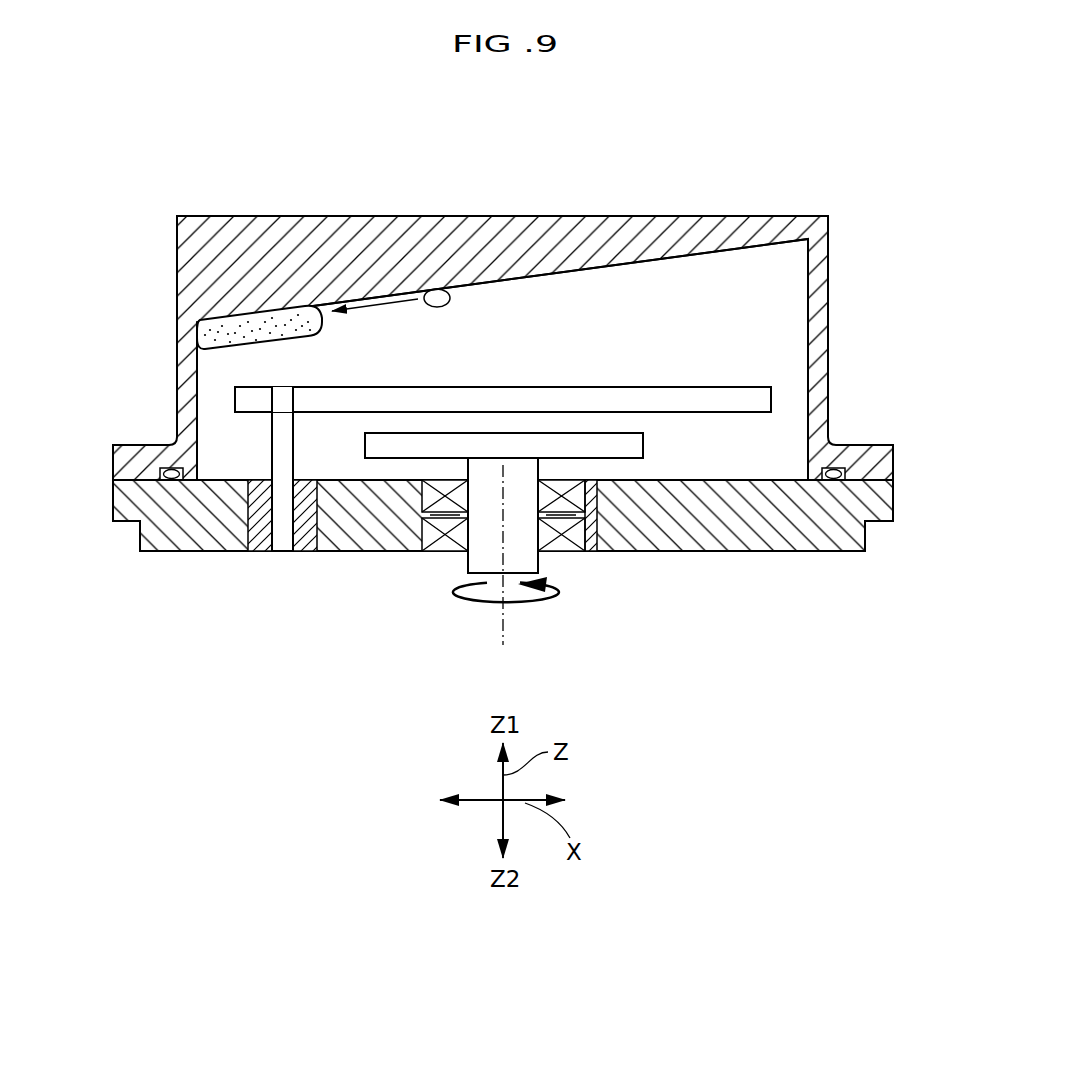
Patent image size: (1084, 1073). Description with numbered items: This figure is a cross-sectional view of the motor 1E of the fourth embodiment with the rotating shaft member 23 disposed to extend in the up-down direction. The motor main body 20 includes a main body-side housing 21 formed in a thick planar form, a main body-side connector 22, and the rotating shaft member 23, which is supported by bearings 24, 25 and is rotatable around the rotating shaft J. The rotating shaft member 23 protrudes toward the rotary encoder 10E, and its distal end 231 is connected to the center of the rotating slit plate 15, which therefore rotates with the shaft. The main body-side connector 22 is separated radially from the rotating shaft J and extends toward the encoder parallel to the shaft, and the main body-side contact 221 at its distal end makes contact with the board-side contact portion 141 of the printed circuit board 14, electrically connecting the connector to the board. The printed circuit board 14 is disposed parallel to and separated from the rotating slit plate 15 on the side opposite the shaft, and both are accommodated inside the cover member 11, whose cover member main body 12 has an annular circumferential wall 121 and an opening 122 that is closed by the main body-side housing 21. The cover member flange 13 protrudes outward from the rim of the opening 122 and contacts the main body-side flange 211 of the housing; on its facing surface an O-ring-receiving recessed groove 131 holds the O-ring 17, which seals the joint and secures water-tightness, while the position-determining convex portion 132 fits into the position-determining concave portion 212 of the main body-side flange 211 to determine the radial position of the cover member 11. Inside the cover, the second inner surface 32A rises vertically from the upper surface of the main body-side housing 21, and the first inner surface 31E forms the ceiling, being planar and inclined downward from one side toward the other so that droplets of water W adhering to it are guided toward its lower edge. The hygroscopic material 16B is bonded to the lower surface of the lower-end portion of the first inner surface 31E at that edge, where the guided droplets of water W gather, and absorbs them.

The motor 1E is at (852, 158).
The rotary encoder 10E is at (832, 277).
The cover member 11 is at (94, 385).
The cover member main body 12 is at (176, 390).
The cover member flange 13 is at (152, 445).
The circumferential wall 121 is at (828, 410).
The opening 122 is at (806, 482).
The O-ring-receiving recessed groove 131 is at (163, 486).
The position-determining convex portion 132 is at (148, 488).
The printed circuit board 14 is at (722, 405).
The board-side contact portion 141 is at (287, 400).
The rotating slit plate 15 is at (650, 452).
The hygroscopic material 16B is at (197, 343).
The O-ring 17 is at (176, 482).
The motor main body 20 is at (830, 590).
The main body-side housing 21 is at (630, 548).
The main body-side flange 211 is at (118, 511).
The position-determining concave portion 212 is at (130, 477).
The main body-side connector 22 is at (268, 525).
The main body-side contact 221 is at (293, 403).
The rotating shaft member 23 is at (466, 560).
The distal end 231 is at (588, 500).
The bearing 24 is at (422, 497).
The bearing 25 is at (422, 532).
The first inner surface 31E is at (622, 266).
The second inner surface 32A is at (200, 352).
The droplet of water W is at (450, 289).
The rotating shaft J is at (503, 633).